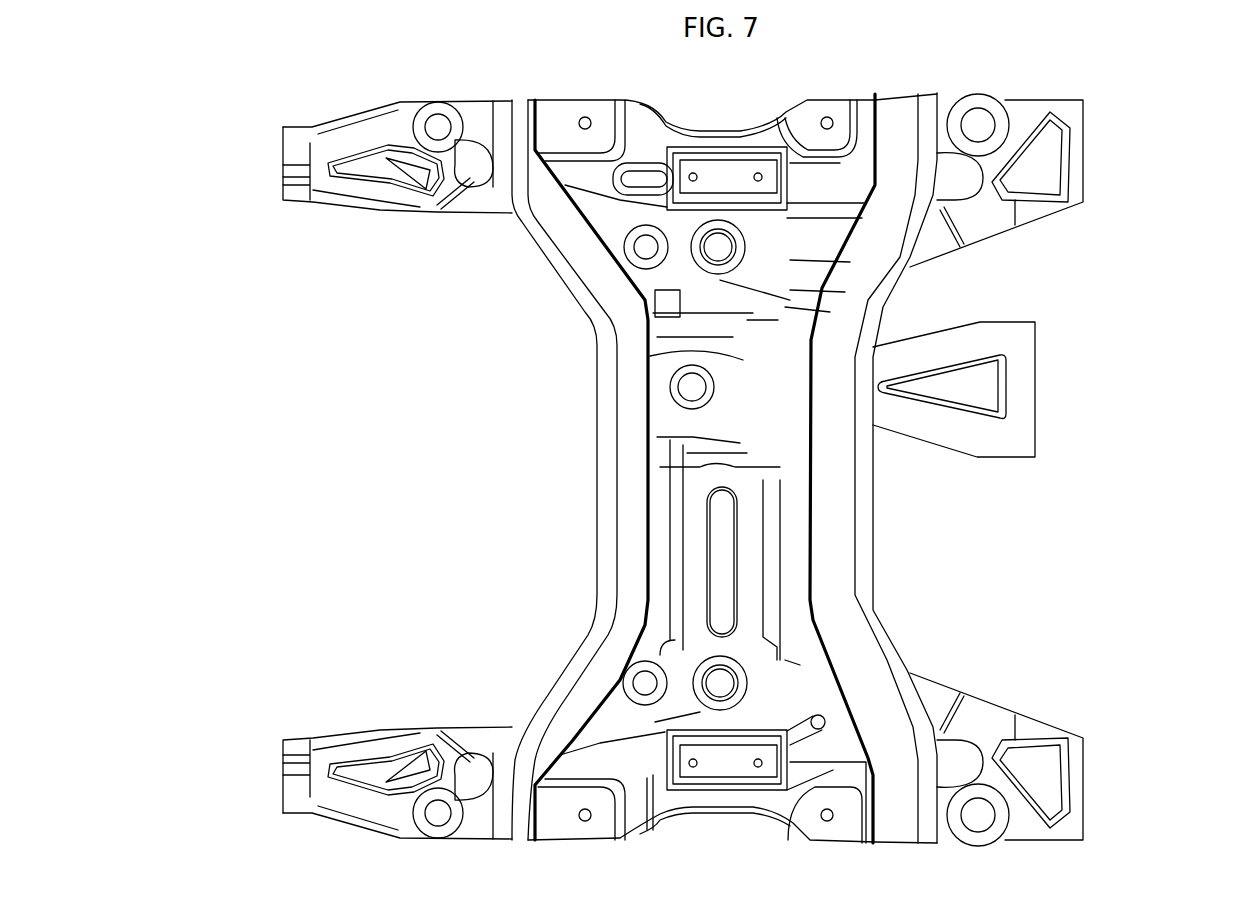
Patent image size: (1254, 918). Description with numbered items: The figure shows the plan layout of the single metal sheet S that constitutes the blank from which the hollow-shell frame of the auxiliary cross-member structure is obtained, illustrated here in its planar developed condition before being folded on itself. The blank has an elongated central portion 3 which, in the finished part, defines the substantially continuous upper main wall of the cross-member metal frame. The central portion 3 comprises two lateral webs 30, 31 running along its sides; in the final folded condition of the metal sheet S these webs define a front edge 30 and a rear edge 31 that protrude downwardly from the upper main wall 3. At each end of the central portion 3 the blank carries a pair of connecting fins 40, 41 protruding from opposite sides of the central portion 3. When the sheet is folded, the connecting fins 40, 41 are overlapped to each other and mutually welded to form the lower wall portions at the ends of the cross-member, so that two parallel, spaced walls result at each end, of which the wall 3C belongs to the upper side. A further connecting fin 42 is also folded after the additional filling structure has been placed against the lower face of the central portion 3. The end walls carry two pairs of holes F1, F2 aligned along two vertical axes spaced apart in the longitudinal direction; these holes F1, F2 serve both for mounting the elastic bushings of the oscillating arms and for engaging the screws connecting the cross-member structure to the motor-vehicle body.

The central portion 3 is at (648, 358).
The wall 3C is at (665, 138).
The lateral web 30 is at (597, 493).
The lateral web 31 is at (862, 513).
The connecting fin 40 is at (360, 197).
The connecting fin 41 is at (1070, 155).
The connecting fin 42 is at (1035, 385).
The hole F1 is at (585, 117).
The hole F2 is at (828, 117).
The metal sheet S is at (1150, 258).